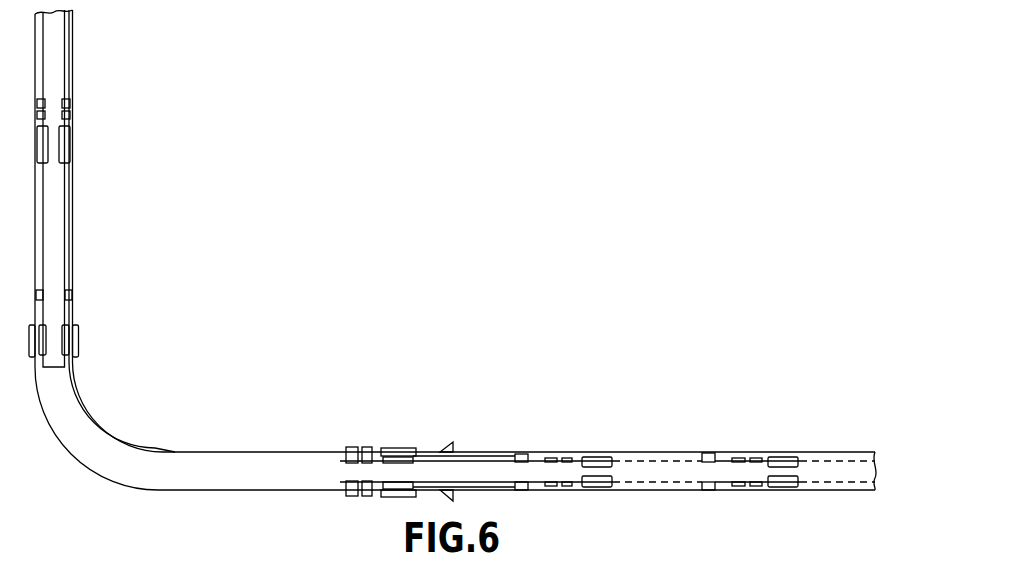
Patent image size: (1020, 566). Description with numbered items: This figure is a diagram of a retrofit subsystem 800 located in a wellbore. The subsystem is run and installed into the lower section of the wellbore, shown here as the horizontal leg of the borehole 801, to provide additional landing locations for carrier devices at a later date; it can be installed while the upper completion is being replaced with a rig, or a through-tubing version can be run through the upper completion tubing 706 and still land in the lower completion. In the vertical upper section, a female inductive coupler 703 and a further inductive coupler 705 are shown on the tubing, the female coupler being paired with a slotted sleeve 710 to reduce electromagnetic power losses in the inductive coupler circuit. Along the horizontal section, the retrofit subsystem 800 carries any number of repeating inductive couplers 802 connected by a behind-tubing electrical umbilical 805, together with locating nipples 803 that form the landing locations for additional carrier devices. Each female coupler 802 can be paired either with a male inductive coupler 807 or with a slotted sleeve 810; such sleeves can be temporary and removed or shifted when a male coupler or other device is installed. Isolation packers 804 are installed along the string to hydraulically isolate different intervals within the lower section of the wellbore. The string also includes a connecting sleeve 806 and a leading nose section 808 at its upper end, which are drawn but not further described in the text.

The female inductive coupler 703 is at (60, 156).
The inductive coupler 705 is at (75, 344).
The tubing string 706 is at (67, 238).
The slotted sleeve 710 is at (67, 121).
The retrofit subsystem 800 is at (498, 468).
The casing 801 is at (860, 454).
The repeating inductive coupler 802 is at (793, 461).
The locating nipple 803 is at (750, 459).
The isolation packer 804 is at (708, 454).
The behind-tubing electrical umbilical 805 is at (647, 460).
The sleeve 806 is at (470, 456).
The male inductive coupler 807 is at (400, 449).
The nose 808 is at (353, 449).
The slotted sleeve 810 is at (593, 458).